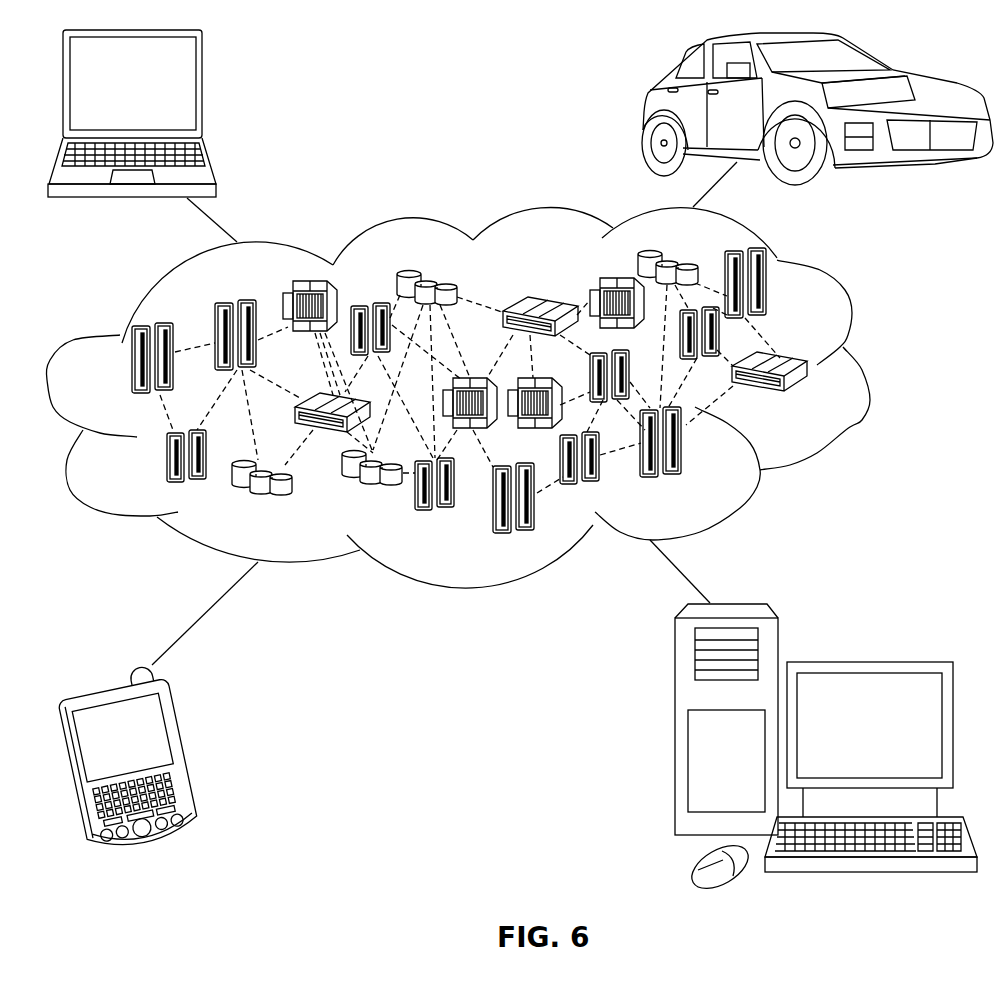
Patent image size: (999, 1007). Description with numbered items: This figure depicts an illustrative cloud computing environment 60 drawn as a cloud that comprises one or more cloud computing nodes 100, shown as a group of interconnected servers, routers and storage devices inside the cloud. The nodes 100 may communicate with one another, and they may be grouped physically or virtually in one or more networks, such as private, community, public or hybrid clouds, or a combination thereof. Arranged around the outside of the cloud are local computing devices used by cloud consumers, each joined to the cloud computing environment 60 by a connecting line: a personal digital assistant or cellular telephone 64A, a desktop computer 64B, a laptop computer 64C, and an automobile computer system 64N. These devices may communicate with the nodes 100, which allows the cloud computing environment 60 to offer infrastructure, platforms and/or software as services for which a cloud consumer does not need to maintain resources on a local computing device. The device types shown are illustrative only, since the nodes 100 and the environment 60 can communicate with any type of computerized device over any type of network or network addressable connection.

The cloud computing environment 60 is at (867, 367).
The cloud computing nodes 100 is at (806, 400).
The personal digital assistant or cellular telephone 64A is at (192, 757).
The desktop computer 64B is at (867, 662).
The laptop computer 64C is at (203, 92).
The automobile computer system 64N is at (643, 112).